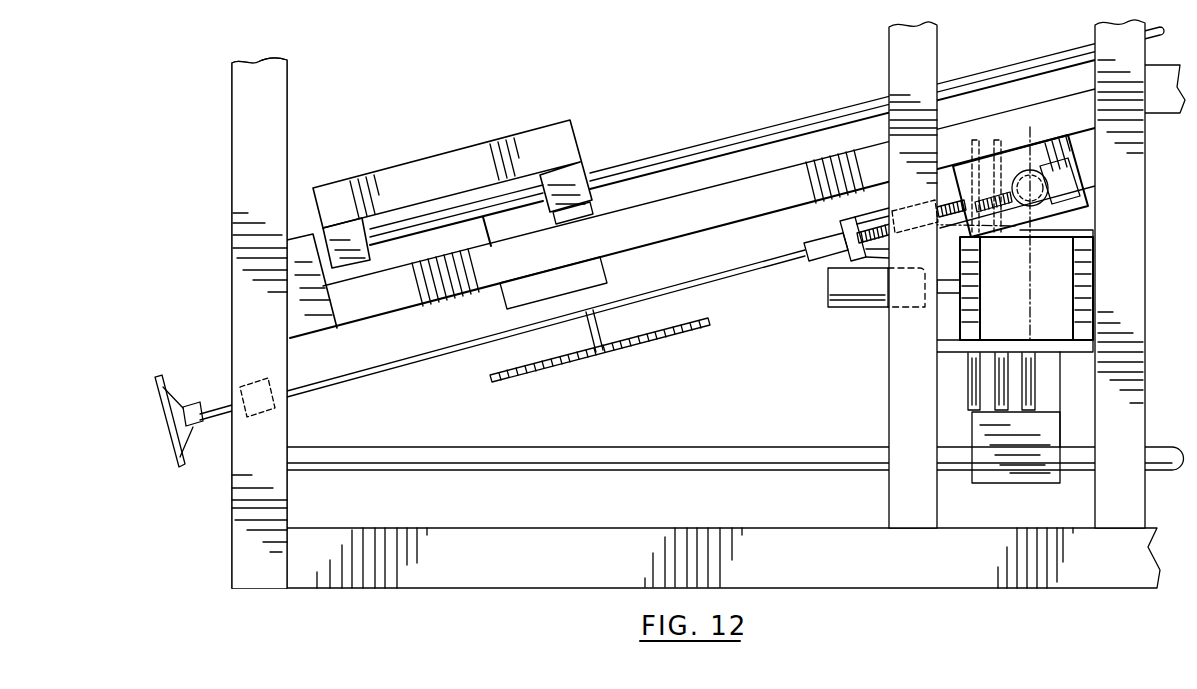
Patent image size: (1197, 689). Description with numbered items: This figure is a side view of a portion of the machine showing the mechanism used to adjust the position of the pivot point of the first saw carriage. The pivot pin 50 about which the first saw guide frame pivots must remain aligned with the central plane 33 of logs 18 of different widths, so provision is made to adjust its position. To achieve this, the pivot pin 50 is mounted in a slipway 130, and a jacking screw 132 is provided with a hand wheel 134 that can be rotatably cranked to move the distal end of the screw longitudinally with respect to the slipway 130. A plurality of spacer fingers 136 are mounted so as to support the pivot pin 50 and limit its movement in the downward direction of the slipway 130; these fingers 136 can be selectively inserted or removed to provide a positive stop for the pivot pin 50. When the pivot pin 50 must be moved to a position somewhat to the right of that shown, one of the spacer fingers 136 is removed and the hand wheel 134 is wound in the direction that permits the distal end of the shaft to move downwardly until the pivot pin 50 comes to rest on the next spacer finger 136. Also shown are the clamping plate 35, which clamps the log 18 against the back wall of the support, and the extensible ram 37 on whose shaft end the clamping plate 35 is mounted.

The log 18 is at (1054, 356).
The central plane 33 is at (1053, 284).
The clamping plate 35 is at (968, 322).
The extensible ram 37 is at (828, 270).
The pivot pin 50 is at (1040, 185).
The slipway 130 is at (1086, 208).
The jacking screw 132 is at (731, 268).
The hand wheel 134 is at (157, 377).
The spacer fingers 136 is at (1002, 148).